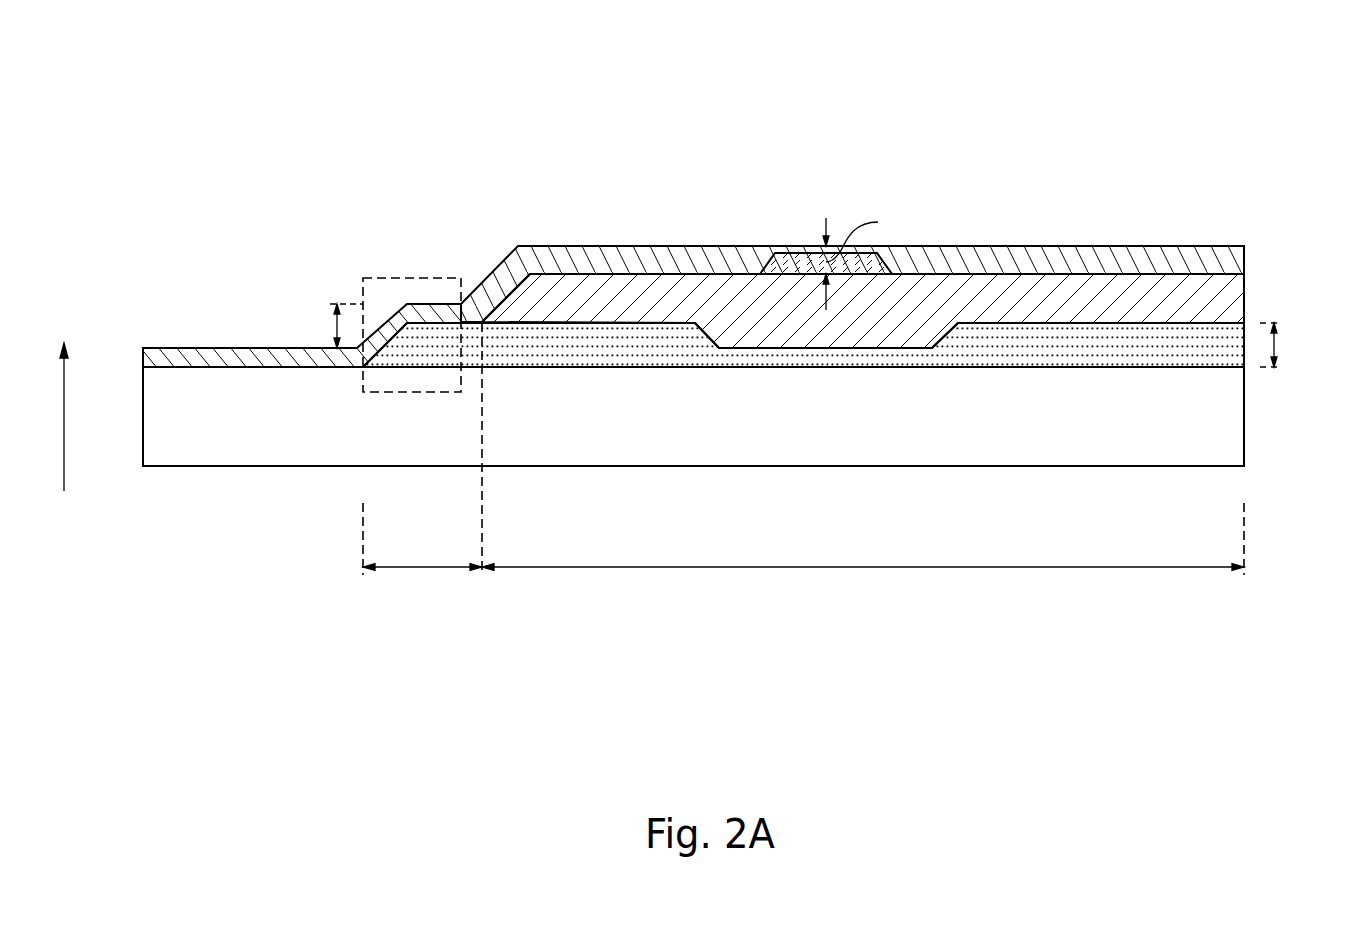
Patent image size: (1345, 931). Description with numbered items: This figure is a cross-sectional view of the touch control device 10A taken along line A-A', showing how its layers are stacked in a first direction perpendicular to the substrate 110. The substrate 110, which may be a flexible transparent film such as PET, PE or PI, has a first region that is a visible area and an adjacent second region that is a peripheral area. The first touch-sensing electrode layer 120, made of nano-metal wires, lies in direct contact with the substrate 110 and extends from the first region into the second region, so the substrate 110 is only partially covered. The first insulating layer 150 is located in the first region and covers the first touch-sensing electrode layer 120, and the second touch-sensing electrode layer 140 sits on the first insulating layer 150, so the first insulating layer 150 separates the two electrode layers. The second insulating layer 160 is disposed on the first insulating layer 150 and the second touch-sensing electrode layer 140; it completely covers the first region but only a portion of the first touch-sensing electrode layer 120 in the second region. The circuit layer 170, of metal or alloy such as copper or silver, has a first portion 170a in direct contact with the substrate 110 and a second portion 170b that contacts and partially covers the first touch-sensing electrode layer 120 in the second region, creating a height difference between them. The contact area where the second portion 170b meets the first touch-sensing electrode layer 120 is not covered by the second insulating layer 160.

The touch control device 10A is at (99, 50).
The substrate 110 is at (1236, 412).
The first touch-sensing electrode layer 120 is at (625, 345).
The second touch-sensing electrode layer 140 is at (795, 262).
The first insulating layer 150 is at (1043, 300).
The second insulating layer 160 is at (1175, 258).
The circuit layer 170 is at (302, 250).
The first portion 170a is at (232, 357).
The second portion 170b is at (409, 279).